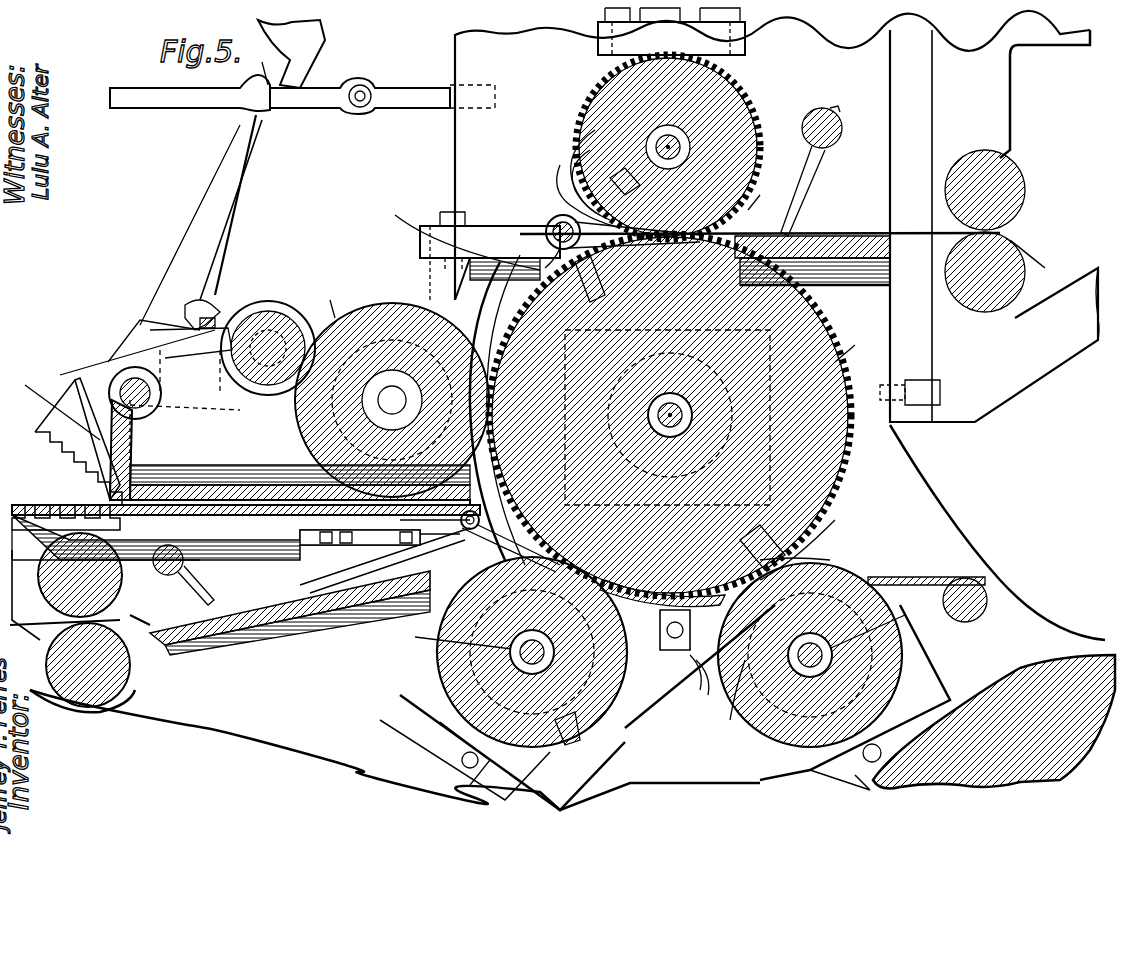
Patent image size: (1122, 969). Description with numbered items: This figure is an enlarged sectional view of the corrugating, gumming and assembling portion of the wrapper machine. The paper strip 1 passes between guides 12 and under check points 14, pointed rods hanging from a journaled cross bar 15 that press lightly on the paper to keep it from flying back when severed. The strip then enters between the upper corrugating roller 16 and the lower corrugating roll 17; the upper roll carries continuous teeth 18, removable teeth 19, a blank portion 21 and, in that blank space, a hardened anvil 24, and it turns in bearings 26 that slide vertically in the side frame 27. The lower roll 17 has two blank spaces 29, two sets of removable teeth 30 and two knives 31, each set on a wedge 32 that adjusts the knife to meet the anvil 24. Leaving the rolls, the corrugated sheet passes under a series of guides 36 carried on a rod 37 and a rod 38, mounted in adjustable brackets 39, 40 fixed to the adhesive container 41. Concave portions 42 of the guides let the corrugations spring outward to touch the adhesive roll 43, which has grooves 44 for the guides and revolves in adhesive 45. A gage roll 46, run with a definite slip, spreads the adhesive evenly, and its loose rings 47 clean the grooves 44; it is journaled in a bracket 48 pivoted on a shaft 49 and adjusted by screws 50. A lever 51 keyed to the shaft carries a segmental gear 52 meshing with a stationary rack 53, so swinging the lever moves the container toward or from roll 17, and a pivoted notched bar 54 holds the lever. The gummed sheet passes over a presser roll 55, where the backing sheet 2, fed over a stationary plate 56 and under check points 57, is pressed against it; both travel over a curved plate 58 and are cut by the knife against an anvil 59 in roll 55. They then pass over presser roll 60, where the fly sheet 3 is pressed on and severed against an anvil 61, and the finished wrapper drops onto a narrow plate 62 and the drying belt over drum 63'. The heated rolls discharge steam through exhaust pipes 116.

The corrugated sheet 1 is at (840, 232).
The backing sheet 2 is at (189, 622).
The fly sheet 3 is at (655, 727).
The guides 12 is at (1006, 214).
The check points 14 is at (804, 178).
The cross bar 15 is at (843, 128).
The upper corrugating roller 16 is at (583, 115).
The lower corrugating roll 17 is at (852, 470).
The continuous teeth 18 is at (755, 120).
The removable teeth 19 is at (748, 212).
The blank portion 21 is at (588, 152).
The anvil 24 is at (593, 132).
The bearings 26 is at (728, 52).
The side frame 27 is at (470, 62).
The blank spaces 29 is at (565, 163).
The removable teeth 30 is at (736, 226).
The knife 31 is at (838, 532).
The wedge 32 is at (830, 522).
The guides 36 is at (533, 232).
The rod 37 is at (556, 222).
The rod 38 is at (435, 536).
The adjustable bracket 39 is at (478, 236).
The adjustable bracket 40 is at (437, 560).
The adhesive container 41 is at (294, 520).
The concave portions 42 is at (455, 320).
The adhesive roll 43 is at (337, 300).
The grooves 44 is at (372, 302).
The adhesive 45 is at (246, 480).
The gage roll 46 is at (288, 312).
The loose rings 47 is at (263, 302).
The bracket 48 is at (178, 340).
The shaft 49 is at (126, 386).
The screws 50 is at (205, 316).
The lever 51 is at (222, 206).
The segmental gear 52 is at (38, 444).
The stationary rack 53 is at (40, 505).
The pivoted notched bar 54 is at (334, 95).
The presser roll 55 is at (436, 660).
The stationary plate 56 is at (258, 632).
The check points 57 is at (196, 580).
The curved plate 58 is at (740, 662).
The anvil 59 is at (565, 742).
The presser roll 60 is at (906, 650).
The anvil 61 is at (836, 560).
The narrow plate 62 is at (928, 578).
The drum 63' is at (994, 718).
The exhaust pipes 116 is at (665, 488).